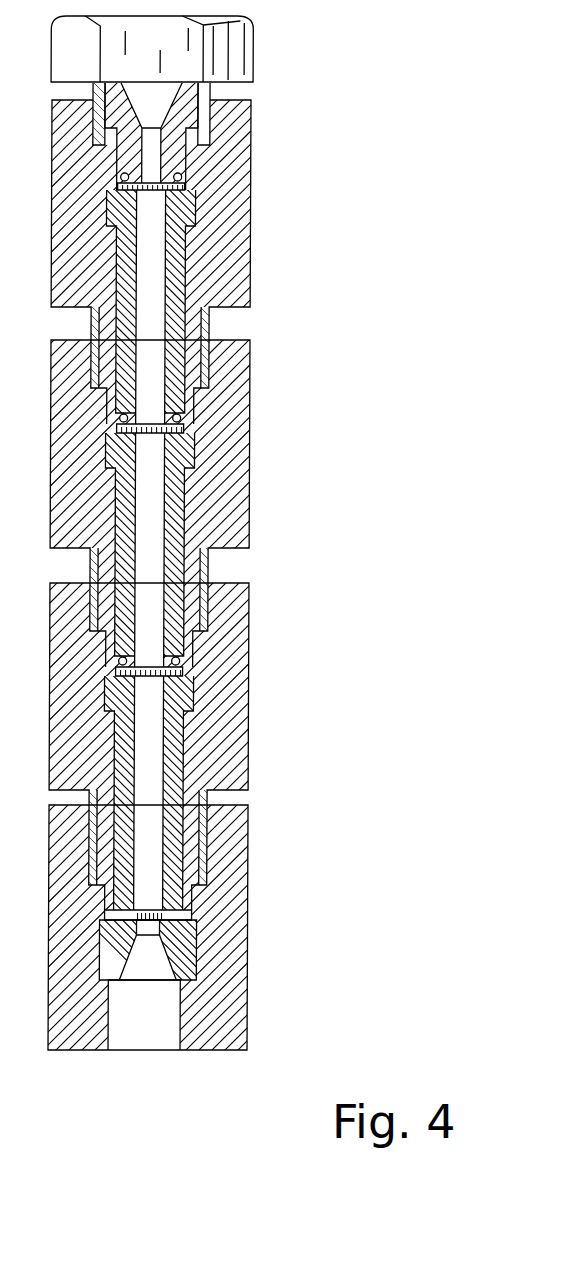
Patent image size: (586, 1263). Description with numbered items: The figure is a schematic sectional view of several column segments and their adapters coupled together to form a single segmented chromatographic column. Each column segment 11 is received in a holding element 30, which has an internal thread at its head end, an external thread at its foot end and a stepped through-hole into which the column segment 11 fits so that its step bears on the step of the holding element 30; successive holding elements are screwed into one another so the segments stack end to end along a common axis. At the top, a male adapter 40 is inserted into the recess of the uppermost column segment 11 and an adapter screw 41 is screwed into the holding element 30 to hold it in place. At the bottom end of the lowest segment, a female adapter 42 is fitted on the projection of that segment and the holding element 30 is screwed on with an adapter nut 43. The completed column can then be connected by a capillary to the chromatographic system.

The adapter screw 41 is at (245, 51).
The male adapter 40 is at (170, 157).
The holding element 30 is at (215, 211).
The column segment 11 is at (211, 307).
The adapter nut 43 is at (251, 853).
The female adapter 42 is at (195, 935).